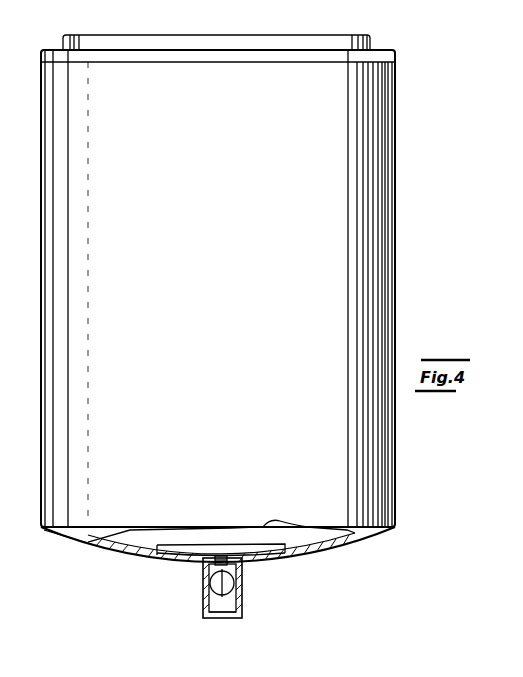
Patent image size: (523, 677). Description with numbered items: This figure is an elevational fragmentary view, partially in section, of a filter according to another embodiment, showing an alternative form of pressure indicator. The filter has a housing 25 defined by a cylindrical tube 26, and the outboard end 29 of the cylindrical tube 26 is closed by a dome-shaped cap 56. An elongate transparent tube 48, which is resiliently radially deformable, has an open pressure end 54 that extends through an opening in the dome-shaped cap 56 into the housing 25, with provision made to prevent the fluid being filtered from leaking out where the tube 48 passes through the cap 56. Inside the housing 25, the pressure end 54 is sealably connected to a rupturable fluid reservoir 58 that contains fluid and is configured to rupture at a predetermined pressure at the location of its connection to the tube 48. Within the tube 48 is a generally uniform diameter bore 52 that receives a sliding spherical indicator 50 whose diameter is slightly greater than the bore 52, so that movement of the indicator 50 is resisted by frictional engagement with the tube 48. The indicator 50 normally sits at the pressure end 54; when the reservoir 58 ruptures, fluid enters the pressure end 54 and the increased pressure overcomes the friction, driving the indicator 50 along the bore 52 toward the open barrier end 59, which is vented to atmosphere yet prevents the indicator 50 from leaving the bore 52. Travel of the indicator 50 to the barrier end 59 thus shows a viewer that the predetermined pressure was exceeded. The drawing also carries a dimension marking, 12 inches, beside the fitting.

The housing 25 is at (397, 249).
The cylindrical tube 26 is at (397, 303).
The outboard end 29 is at (397, 505).
The rupturable fluid reservoir 58 is at (147, 556).
The dome-shaped cap 56 is at (318, 557).
The pressure end 54 is at (205, 563).
The bore 52 is at (238, 565).
The sliding spherical indicator 50 is at (212, 586).
The elongate transparent tube 48 is at (205, 608).
The barrier end 59 is at (226, 624).
The diameter dimension 12 is at (302, 650).